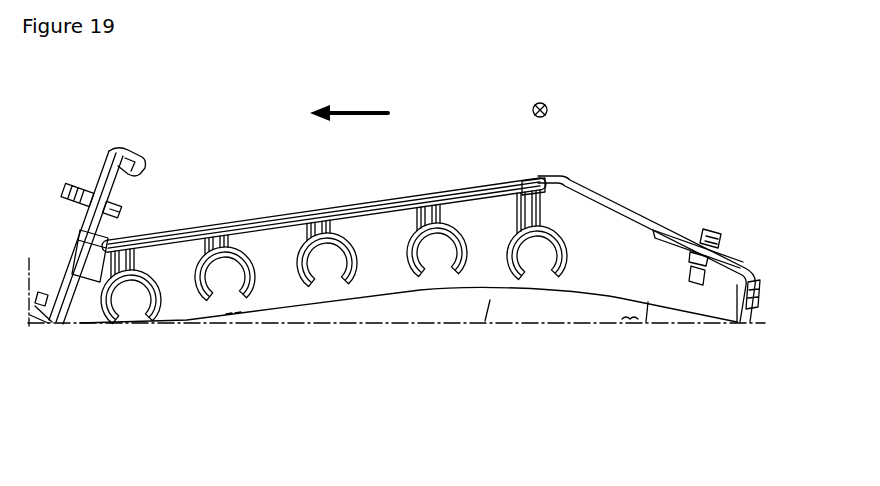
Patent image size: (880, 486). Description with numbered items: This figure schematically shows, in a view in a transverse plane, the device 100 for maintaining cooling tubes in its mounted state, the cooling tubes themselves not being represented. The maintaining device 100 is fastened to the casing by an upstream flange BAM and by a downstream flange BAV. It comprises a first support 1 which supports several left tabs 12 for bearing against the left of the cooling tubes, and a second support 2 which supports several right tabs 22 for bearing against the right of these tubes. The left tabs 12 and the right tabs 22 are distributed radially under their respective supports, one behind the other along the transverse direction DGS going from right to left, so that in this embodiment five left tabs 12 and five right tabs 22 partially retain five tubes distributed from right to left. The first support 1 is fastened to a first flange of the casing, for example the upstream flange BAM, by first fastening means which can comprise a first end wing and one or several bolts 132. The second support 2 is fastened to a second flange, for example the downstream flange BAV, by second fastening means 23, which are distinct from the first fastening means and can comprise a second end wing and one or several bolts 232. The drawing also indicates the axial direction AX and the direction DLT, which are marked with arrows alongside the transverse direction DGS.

The first support 1 is at (324, 186).
The second support 2 is at (459, 186).
The left tab 12 is at (101, 300).
The right tab 22 is at (159, 294).
The second fastening means 23 is at (649, 208).
The maintaining device 100 is at (593, 130).
The bolt 132 is at (80, 182).
The bolt 232 is at (712, 228).
The axial direction AX is at (368, 412).
The transverse direction DGS is at (354, 107).
The transverse direction DLT is at (541, 102).
The upstream flange BAM is at (122, 148).
The downstream flange BAV is at (754, 273).